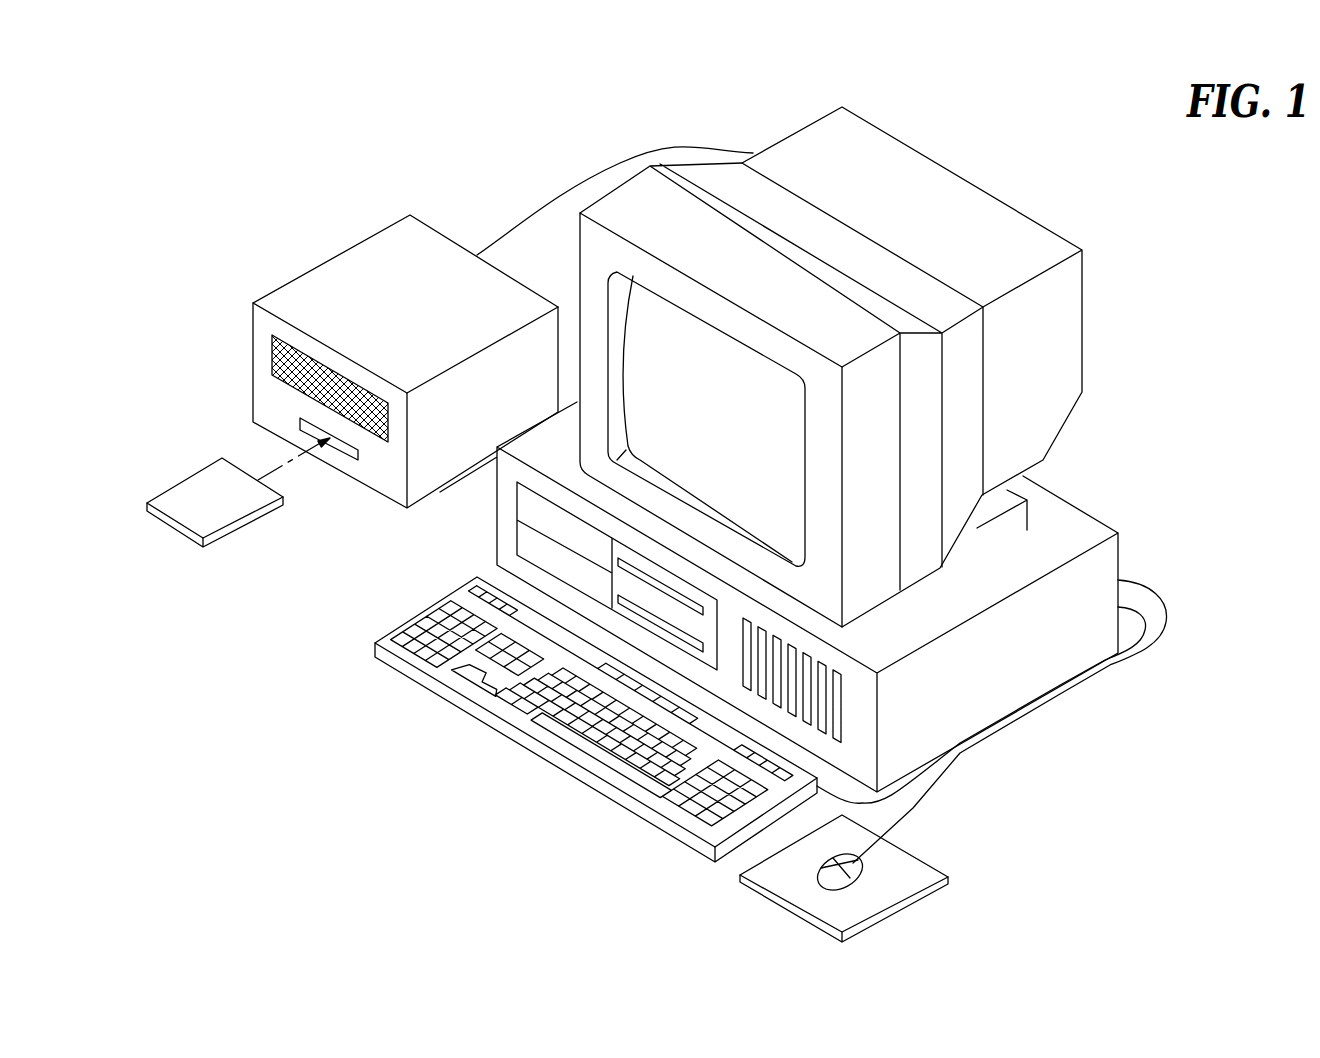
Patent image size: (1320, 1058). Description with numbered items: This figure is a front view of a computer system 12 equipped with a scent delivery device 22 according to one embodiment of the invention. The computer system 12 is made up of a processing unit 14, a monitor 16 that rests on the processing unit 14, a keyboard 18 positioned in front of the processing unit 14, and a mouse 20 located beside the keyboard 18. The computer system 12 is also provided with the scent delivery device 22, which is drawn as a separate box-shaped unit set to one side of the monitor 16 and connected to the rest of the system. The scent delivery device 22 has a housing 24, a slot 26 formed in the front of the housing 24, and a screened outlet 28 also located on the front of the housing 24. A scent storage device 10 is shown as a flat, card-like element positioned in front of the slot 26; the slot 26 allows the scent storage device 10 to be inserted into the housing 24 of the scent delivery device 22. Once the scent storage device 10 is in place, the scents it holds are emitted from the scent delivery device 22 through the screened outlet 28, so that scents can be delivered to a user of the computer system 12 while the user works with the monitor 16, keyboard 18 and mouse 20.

The scent storage device 10 is at (202, 517).
The computer system 12 is at (1164, 202).
The processing unit 14 is at (938, 698).
The monitor 16 is at (977, 230).
The keyboard 18 is at (548, 711).
The mouse 20 is at (860, 862).
The scent delivery device 22 is at (470, 344).
The housing 24 is at (345, 247).
The slot 26 is at (348, 452).
The screened outlet 28 is at (287, 363).